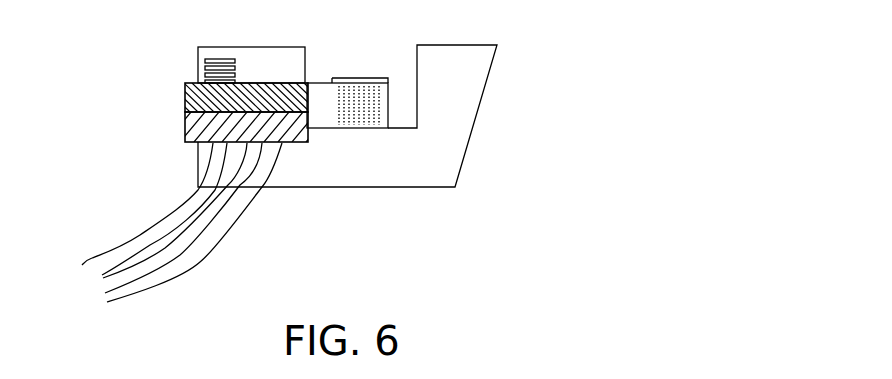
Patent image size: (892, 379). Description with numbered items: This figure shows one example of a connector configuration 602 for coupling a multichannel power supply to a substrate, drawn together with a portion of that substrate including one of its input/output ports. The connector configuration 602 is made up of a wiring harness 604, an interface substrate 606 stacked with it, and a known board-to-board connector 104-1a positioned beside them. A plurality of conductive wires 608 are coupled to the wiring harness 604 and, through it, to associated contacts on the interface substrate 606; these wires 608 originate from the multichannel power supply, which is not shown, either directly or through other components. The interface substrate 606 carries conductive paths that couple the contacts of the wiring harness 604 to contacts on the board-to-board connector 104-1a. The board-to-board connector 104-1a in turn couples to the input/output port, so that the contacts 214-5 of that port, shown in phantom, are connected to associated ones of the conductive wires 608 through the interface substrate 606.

The connector configuration 602 is at (148, 55).
The board-to-board connector 104-1a is at (318, 82).
The interface substrate 606 is at (185, 90).
The wiring harness 604 is at (185, 133).
The contacts 214-5 is at (405, 106).
The conductive wires 608 is at (140, 205).